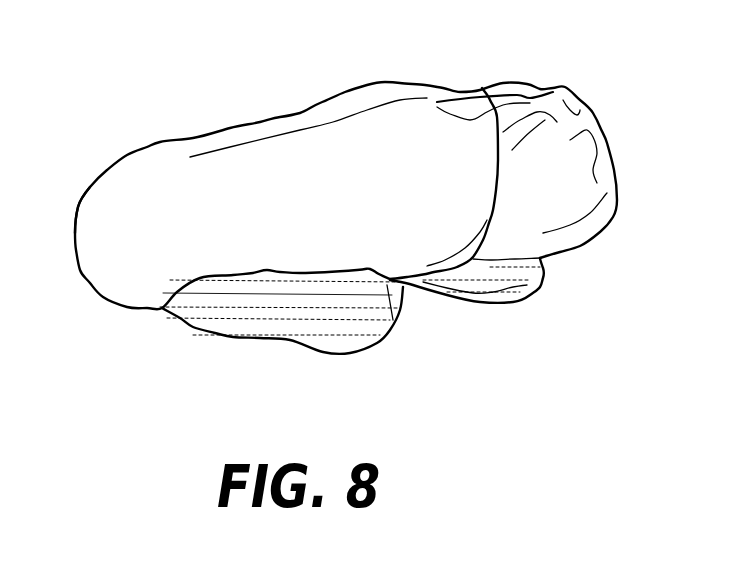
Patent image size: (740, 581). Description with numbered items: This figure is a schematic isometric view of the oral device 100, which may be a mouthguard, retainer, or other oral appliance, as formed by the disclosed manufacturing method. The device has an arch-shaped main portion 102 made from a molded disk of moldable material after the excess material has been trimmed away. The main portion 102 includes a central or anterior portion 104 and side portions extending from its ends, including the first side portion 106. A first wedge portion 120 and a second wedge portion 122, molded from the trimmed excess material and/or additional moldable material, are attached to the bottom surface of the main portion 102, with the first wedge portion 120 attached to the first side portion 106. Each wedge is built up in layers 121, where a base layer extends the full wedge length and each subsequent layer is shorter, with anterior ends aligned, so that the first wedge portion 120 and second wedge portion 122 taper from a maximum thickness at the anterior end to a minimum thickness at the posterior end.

The oral device 100 is at (98, 123).
The main portion 102 is at (103, 282).
The central portion 104 is at (593, 130).
The first side portion 106 is at (220, 160).
The first wedge portion 120 is at (237, 327).
The layers 121 is at (328, 312).
The second wedge portion 122 is at (517, 278).